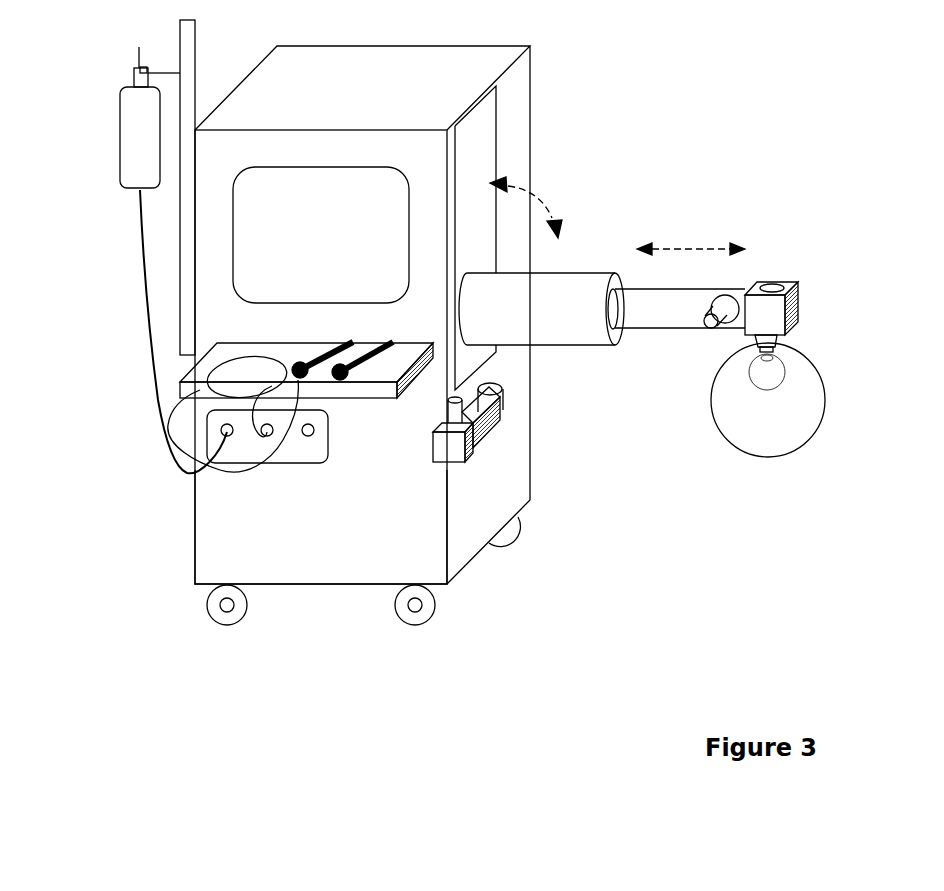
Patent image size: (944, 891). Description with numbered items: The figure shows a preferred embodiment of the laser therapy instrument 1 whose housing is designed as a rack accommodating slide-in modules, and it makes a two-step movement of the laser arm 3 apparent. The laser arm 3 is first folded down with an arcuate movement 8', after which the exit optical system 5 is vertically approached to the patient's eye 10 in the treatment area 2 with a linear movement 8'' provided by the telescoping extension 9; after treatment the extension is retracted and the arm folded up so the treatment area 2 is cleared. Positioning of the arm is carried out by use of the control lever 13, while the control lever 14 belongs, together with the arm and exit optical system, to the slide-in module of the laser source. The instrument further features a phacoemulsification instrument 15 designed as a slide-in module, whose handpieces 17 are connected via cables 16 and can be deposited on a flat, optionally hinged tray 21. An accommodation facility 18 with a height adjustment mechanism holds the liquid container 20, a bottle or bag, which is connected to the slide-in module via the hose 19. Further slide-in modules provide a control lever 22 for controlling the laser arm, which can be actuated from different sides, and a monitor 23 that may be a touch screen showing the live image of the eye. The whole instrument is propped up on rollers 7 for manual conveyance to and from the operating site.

The laser therapy instrument 1 is at (320, 585).
The treatment area 2 is at (798, 438).
The laser arm 3 is at (542, 345).
The exit optical system 5 is at (778, 343).
The rollers 7 is at (437, 605).
The arcuate movement 8' is at (531, 207).
The linear movement 8'' is at (691, 239).
The telescoping extension 9 is at (660, 332).
The patient's eye 10 is at (778, 371).
The control lever 13 is at (780, 282).
The control lever 14 is at (718, 328).
The phacoemulsification instrument 15 is at (313, 463).
The cables 16 is at (233, 503).
The handpieces 17 is at (323, 350).
The accommodation facility 18 is at (140, 63).
The hose 19 is at (148, 383).
The liquid container 20 is at (120, 137).
The depositing tray 21 is at (375, 398).
The control lever 22 is at (475, 447).
The monitor 23 is at (268, 167).